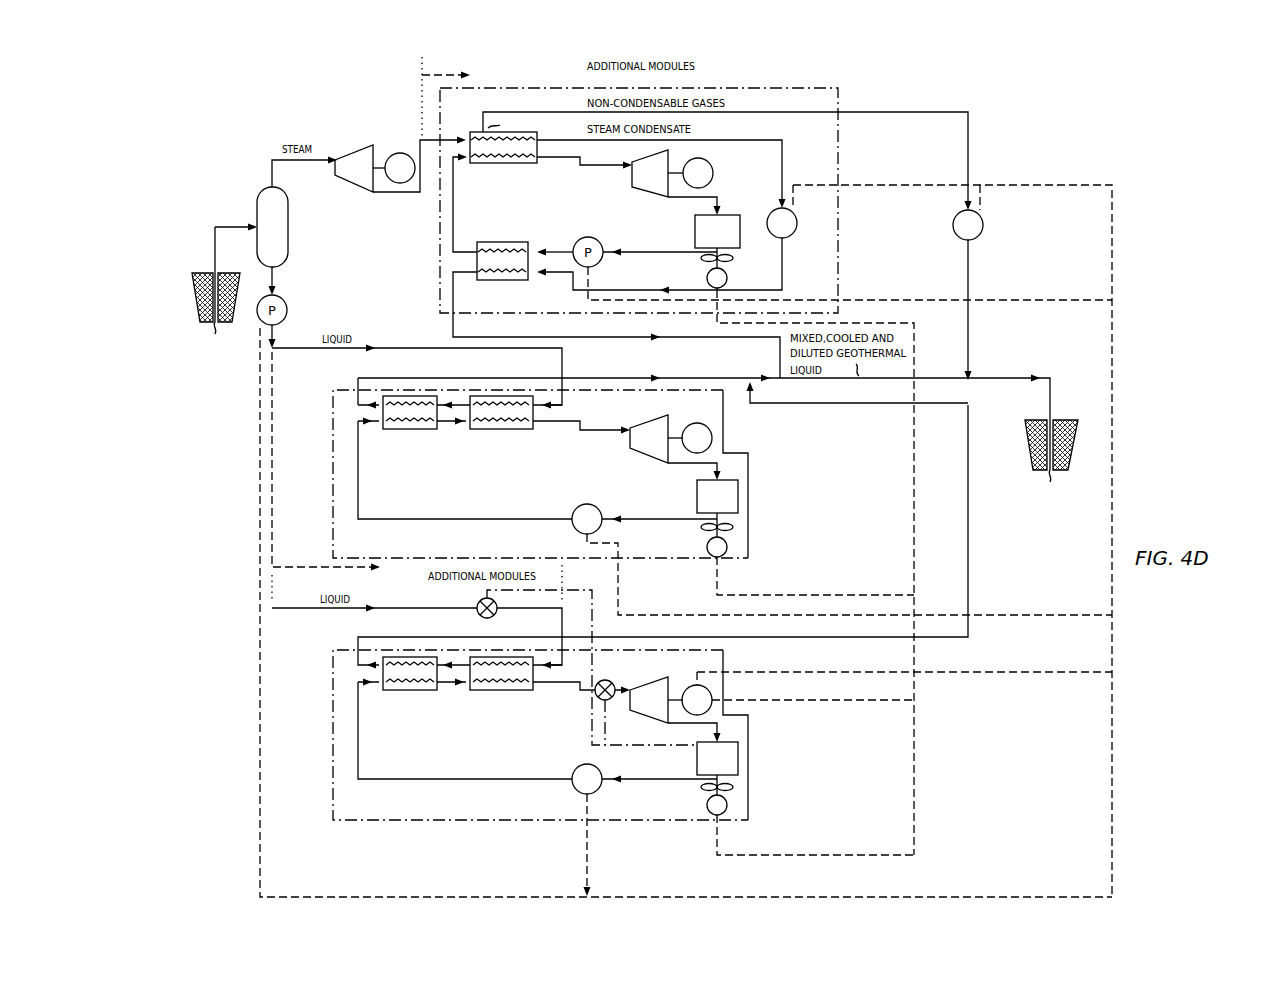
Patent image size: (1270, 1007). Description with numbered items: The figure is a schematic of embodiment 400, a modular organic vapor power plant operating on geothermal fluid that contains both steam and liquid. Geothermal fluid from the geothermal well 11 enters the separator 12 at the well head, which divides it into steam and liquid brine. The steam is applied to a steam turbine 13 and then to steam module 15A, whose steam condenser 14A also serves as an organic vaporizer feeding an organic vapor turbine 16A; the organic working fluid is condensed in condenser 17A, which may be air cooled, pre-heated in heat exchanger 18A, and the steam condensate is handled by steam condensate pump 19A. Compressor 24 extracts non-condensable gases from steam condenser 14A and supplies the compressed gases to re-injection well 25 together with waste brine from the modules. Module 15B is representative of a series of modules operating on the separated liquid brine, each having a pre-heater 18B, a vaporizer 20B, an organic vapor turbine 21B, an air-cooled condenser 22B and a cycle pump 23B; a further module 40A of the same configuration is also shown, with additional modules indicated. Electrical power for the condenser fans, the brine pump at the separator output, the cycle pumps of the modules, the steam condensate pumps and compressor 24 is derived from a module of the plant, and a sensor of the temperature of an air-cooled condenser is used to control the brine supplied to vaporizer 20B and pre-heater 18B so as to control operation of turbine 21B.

The geothermal production well 11 is at (215, 266).
The separator 12 is at (288, 212).
The steam turbine 13 is at (342, 190).
The steam condenser 14A is at (537, 164).
The steam module 15A is at (440, 268).
The organic vapor turbine 16A is at (640, 197).
The condenser 17A is at (695, 228).
The preheater heat exchanger 18A is at (492, 280).
The steam condensate pump 19A is at (772, 235).
The compressor 24 is at (978, 238).
The re-injection well 25 is at (1048, 419).
The module 15B is at (748, 517).
The pre-heater 18B is at (410, 429).
The vaporizer 20B is at (533, 431).
The organic vapor turbine 21B is at (638, 463).
The air-cooled condenser 22B is at (697, 504).
The cycle pump 23B is at (598, 507).
The power plant module 40A is at (329, 765).
The embodiment 400 is at (840, 88).